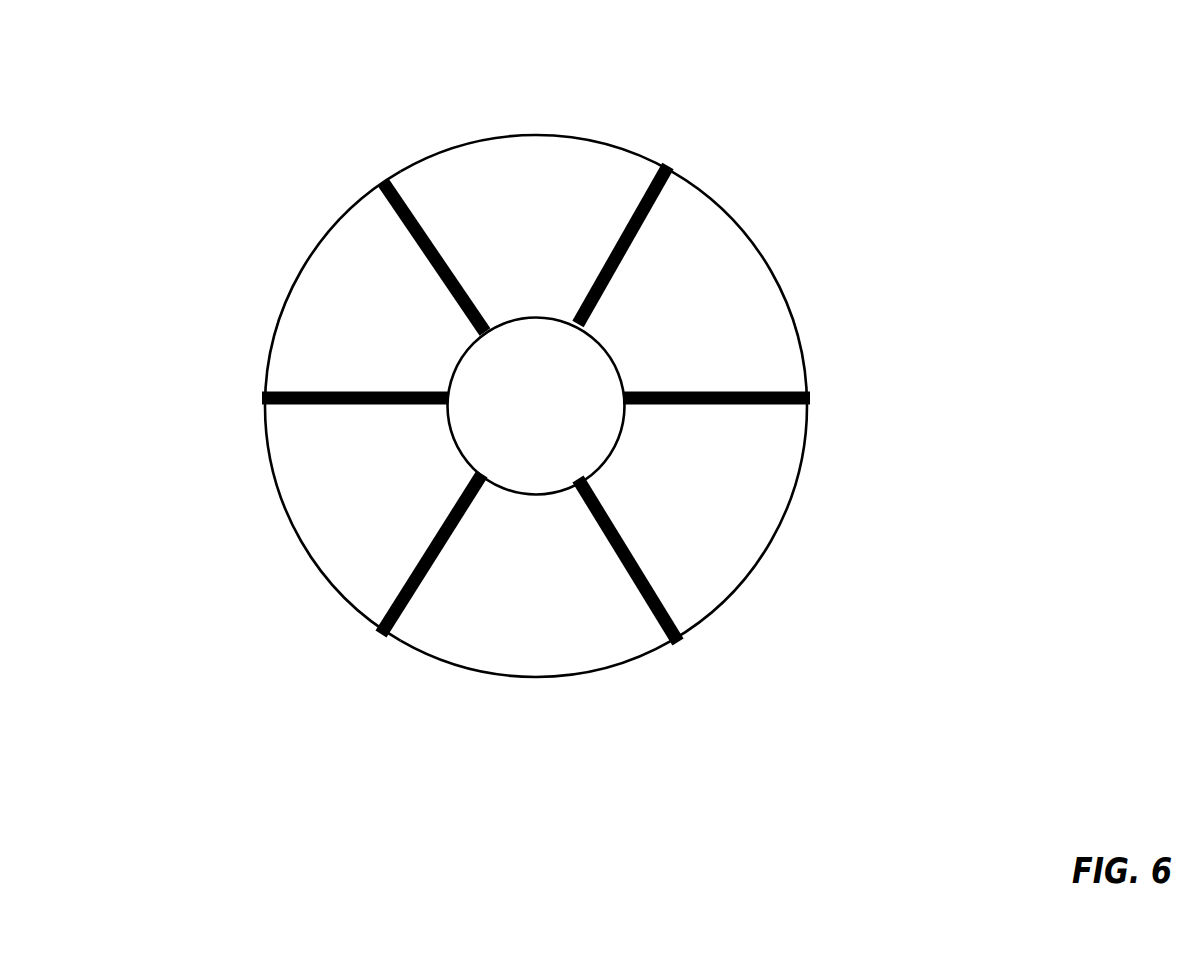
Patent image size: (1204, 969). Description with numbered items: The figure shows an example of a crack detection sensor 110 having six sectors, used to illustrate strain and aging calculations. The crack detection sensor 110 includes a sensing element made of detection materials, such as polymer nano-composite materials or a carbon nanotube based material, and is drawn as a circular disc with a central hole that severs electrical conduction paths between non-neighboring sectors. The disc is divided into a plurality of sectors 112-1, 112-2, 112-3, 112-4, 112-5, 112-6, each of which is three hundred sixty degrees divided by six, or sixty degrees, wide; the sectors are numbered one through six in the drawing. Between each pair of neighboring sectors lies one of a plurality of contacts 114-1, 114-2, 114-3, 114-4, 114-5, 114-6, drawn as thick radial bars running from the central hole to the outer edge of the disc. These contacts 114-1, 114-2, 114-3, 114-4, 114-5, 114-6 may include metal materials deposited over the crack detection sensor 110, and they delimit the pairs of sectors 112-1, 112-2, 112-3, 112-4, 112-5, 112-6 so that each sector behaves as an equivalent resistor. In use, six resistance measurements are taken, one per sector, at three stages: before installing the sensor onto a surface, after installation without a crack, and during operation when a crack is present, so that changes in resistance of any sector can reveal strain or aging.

The crack detection sensor 110 is at (246, 66).
The sector 112-1 is at (517, 135).
The sector 112-2 is at (280, 313).
The sector 112-3 is at (282, 510).
The sector 112-4 is at (497, 678).
The sector 112-5 is at (772, 548).
The sector 112-6 is at (768, 262).
The contact 114-1 is at (668, 168).
The contact 114-2 is at (385, 182).
The contact 114-3 is at (260, 398).
The contact 114-4 is at (381, 632).
The contact 114-5 is at (680, 640).
The contact 114-6 is at (810, 398).